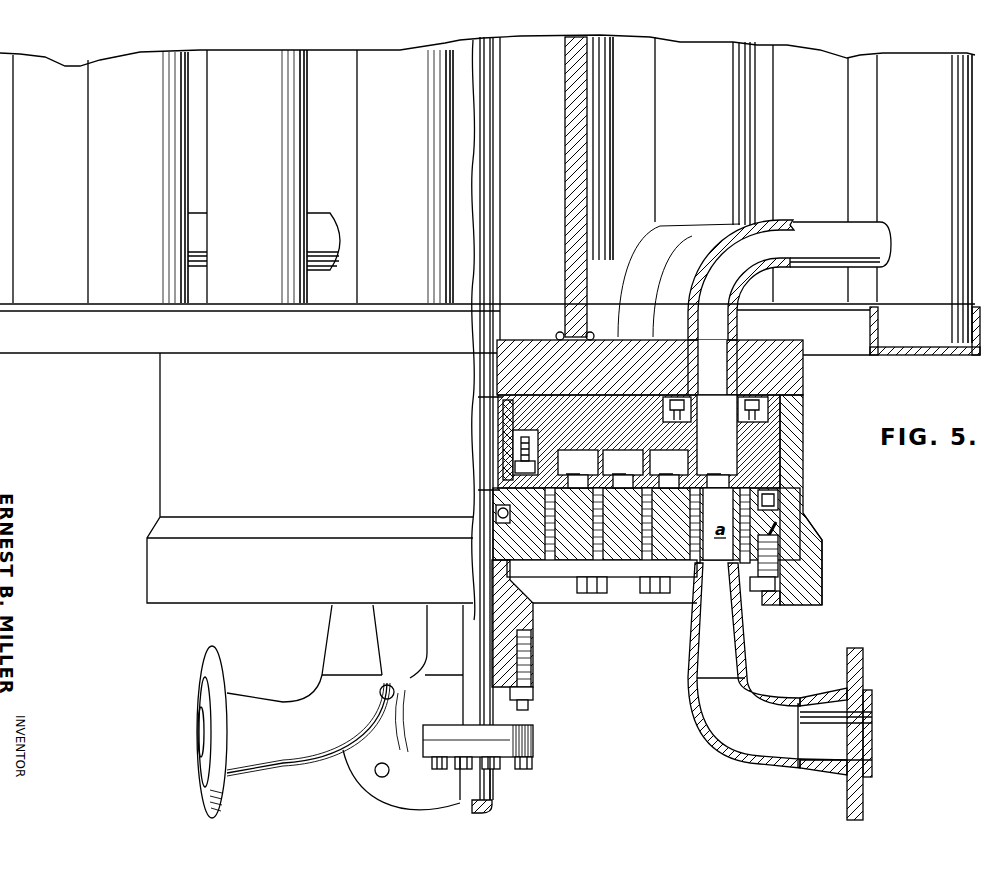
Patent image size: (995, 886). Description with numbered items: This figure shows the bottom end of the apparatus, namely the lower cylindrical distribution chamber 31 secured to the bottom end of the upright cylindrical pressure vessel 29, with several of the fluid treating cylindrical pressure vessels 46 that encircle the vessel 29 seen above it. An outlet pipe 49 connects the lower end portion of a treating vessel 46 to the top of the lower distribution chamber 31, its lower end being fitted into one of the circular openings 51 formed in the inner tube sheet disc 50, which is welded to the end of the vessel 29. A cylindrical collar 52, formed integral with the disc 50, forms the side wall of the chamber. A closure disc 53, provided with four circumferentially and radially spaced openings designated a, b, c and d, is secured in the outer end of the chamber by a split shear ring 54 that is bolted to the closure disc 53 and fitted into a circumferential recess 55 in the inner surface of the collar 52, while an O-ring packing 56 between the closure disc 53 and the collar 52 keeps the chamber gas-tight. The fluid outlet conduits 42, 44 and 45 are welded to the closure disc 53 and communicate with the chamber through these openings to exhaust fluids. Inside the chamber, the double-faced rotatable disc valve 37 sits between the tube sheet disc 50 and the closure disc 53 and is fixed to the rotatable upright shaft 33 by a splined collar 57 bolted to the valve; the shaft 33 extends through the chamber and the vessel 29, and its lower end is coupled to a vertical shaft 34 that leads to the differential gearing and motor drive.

The upright cylindrical pressure vessel 29 is at (565, 214).
The lower cylindrical distribution chamber 31 is at (812, 456).
The rotatable upright shaft 33 is at (480, 162).
The vertical shaft 34 is at (478, 790).
The double-faced rotatable disc valve 37 is at (604, 434).
The fluid outlet conduit 42 is at (703, 727).
The fluid outlet conduit 44 is at (333, 647).
The fluid outlet conduit 45 is at (440, 635).
The fluid treating cylindrical pressure vessel 46 is at (936, 228).
The outlet pipe 49 is at (851, 250).
The inner tube sheet disc 50 is at (780, 380).
The circular openings 51 is at (740, 338).
The cylindrical collar 52 is at (823, 547).
The closure disc 53 is at (780, 507).
The split shear ring 54 is at (790, 577).
The circumferential recess 55 is at (787, 590).
The O-ring packing 56 is at (777, 532).
The splined collar 57 is at (508, 433).